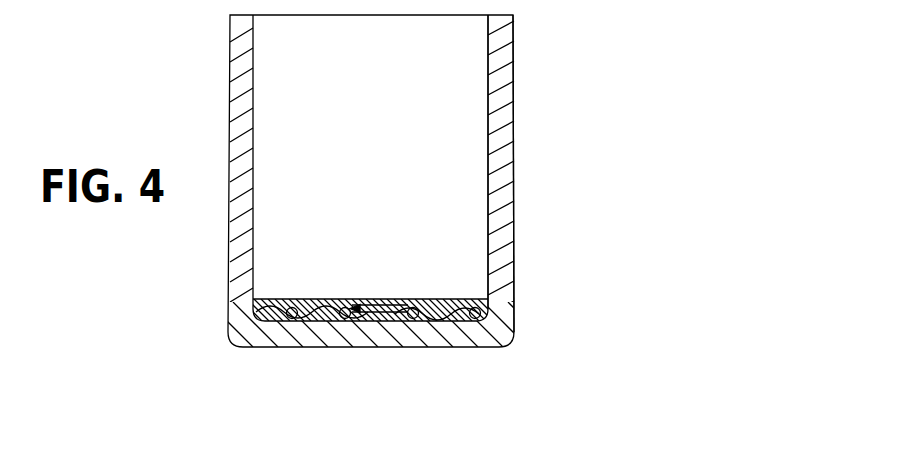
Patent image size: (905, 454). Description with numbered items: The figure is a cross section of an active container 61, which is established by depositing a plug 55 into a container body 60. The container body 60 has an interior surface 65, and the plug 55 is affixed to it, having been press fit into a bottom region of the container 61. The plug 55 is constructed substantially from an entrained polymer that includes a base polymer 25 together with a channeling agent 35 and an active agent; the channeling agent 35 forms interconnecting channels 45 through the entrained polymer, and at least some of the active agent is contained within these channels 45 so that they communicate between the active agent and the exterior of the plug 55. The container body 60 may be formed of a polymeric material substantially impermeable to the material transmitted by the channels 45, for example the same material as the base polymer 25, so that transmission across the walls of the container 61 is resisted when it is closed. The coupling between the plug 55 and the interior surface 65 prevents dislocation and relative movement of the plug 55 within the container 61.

The base polymer 25 is at (237, 212).
The channeling agent 35 is at (488, 301).
The interconnecting channels 45 is at (344, 322).
The plug 55 is at (403, 298).
The container body 60 is at (513, 207).
The active container 61 is at (527, 86).
The interior surface 65 is at (490, 239).